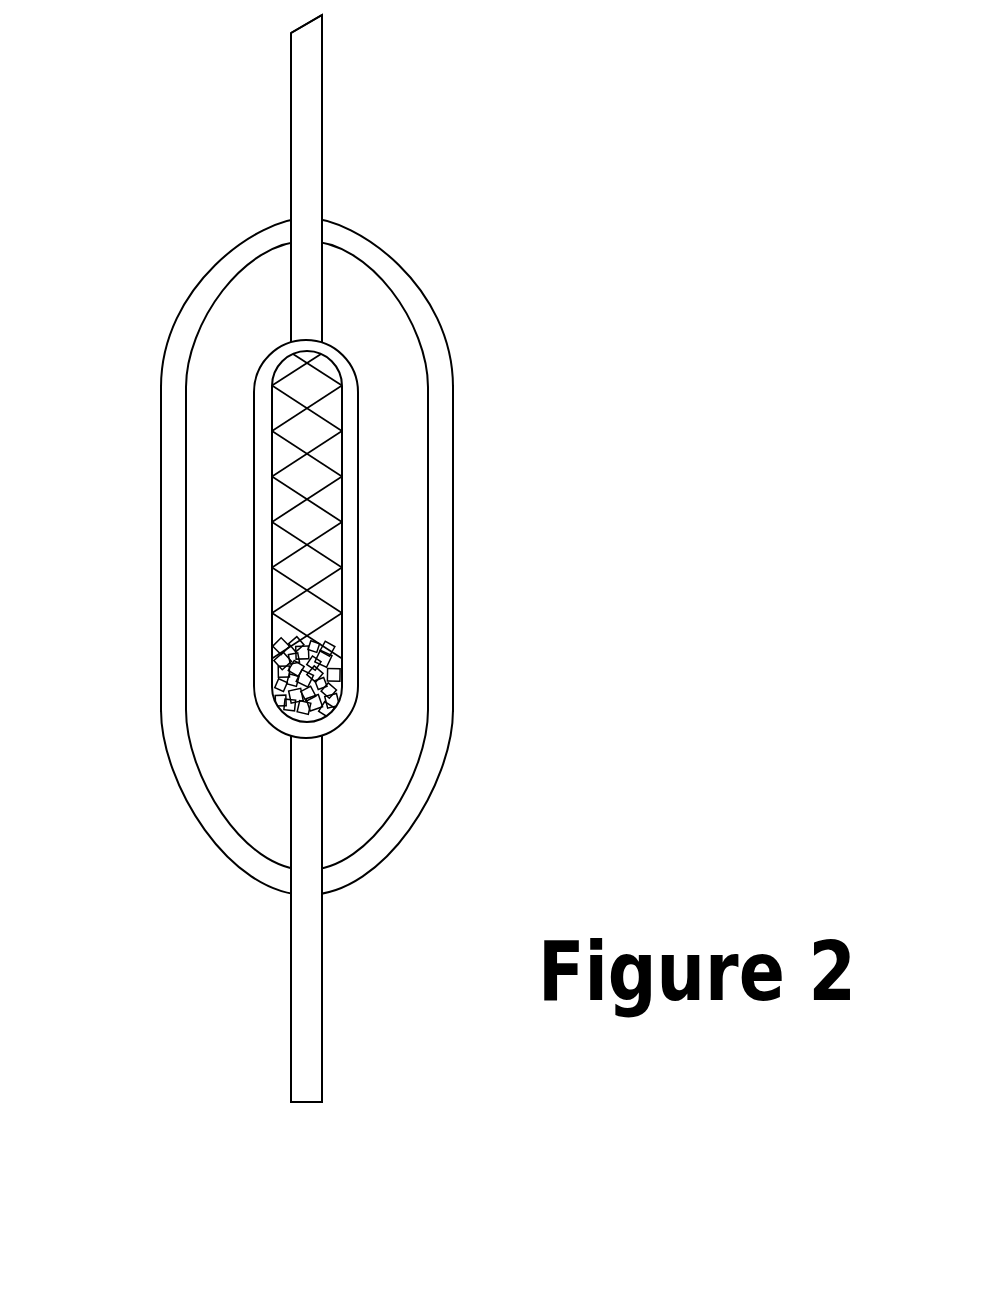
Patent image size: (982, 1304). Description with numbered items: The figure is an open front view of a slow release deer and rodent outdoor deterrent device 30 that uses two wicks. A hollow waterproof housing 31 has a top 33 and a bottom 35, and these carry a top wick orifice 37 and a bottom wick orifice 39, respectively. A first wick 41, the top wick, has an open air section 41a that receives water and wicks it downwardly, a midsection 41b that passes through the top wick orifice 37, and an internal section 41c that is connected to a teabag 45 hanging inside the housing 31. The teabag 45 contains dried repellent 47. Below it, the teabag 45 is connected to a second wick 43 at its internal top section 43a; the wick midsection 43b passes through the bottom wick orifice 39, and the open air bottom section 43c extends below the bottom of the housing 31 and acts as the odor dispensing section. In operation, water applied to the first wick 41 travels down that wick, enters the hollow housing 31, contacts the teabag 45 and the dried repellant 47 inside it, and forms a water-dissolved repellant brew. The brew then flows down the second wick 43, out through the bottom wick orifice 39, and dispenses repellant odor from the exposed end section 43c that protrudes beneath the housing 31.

The slow release deer and rodent outdoor deterrent device 30 is at (525, 345).
The hollow waterproof housing 31 is at (453, 620).
The top 33 is at (362, 250).
The bottom 35 is at (228, 840).
The top wick orifice 37 is at (322, 218).
The bottom wick orifice 39 is at (323, 885).
The first wick 41 is at (303, 125).
The open air section 41a is at (307, 54).
The midsection 41b is at (303, 230).
The internal section 41c is at (303, 333).
The second wick 43 is at (305, 978).
The internal top section 43a is at (303, 738).
The wick midsection 43b is at (307, 880).
The open air bottom section 43c is at (323, 1048).
The teabag 45 is at (358, 537).
The dried repellent 47 is at (287, 665).